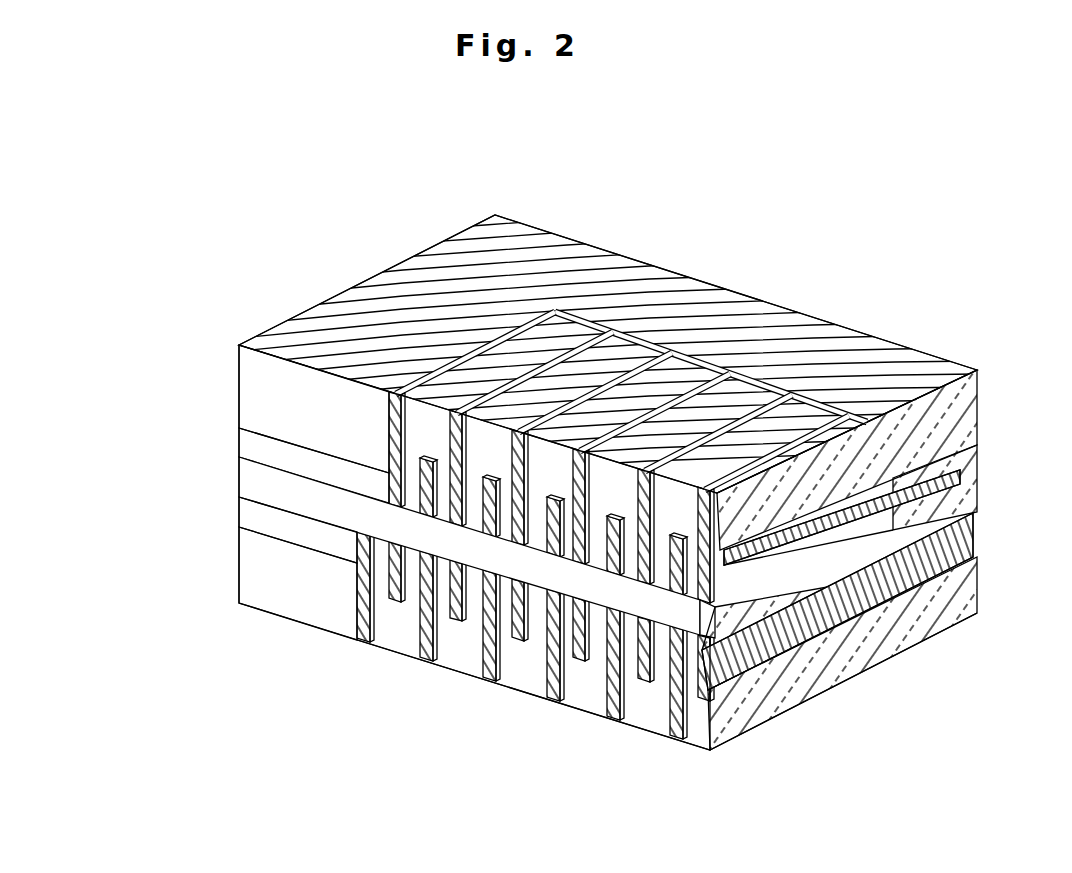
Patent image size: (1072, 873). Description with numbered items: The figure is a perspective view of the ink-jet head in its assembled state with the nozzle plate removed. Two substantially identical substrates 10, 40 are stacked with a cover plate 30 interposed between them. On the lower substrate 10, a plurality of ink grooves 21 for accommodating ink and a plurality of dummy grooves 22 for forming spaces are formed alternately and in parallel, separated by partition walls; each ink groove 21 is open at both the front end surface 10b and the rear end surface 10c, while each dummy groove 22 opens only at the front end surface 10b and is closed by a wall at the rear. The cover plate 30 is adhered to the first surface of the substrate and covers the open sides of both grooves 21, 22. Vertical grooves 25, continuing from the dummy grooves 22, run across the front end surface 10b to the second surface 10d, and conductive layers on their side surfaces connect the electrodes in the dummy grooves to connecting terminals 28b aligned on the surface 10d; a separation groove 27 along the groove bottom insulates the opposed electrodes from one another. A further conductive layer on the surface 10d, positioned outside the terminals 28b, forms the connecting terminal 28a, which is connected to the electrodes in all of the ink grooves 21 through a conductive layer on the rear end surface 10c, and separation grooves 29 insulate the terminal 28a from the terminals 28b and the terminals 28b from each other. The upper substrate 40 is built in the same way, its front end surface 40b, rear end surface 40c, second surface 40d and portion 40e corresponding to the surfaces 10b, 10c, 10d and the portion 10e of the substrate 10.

The substrate 10 is at (252, 628).
The front end surface of the substrate 10b is at (418, 655).
The rear end surface of the substrate 10c is at (980, 580).
The second surface of the substrate 10d is at (755, 740).
The portion of the substrate 10e is at (238, 545).
The ink groove 21 is at (430, 455).
The dummy groove 22 is at (586, 453).
The vertical groove 25 is at (394, 440).
The separation groove 27 is at (690, 400).
The connecting terminal 28a is at (380, 290).
The connecting terminal 28b is at (790, 432).
The separation groove 29 is at (760, 390).
The cover plate 30 is at (830, 568).
The substrate 40 is at (531, 221).
The front end surface of the substrate 40b is at (262, 447).
The rear end surface of the substrate 40c is at (980, 413).
The second surface of the substrate 40d is at (560, 277).
The portion of the substrate 40e is at (318, 332).